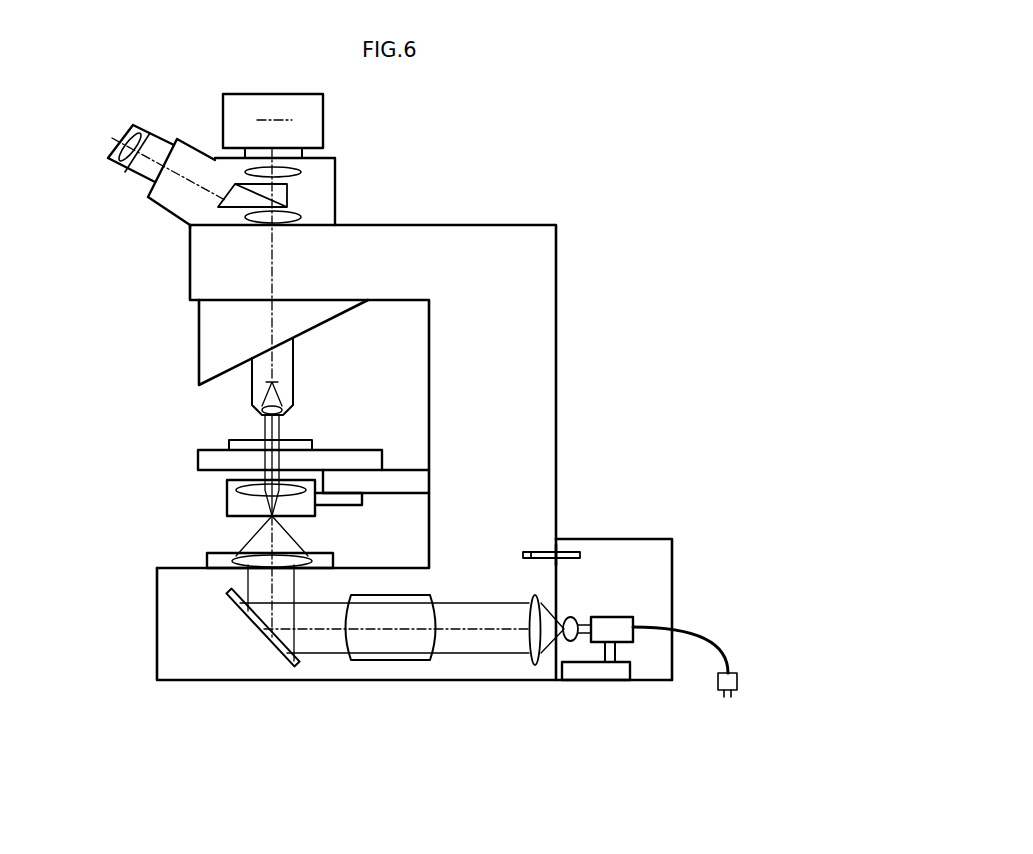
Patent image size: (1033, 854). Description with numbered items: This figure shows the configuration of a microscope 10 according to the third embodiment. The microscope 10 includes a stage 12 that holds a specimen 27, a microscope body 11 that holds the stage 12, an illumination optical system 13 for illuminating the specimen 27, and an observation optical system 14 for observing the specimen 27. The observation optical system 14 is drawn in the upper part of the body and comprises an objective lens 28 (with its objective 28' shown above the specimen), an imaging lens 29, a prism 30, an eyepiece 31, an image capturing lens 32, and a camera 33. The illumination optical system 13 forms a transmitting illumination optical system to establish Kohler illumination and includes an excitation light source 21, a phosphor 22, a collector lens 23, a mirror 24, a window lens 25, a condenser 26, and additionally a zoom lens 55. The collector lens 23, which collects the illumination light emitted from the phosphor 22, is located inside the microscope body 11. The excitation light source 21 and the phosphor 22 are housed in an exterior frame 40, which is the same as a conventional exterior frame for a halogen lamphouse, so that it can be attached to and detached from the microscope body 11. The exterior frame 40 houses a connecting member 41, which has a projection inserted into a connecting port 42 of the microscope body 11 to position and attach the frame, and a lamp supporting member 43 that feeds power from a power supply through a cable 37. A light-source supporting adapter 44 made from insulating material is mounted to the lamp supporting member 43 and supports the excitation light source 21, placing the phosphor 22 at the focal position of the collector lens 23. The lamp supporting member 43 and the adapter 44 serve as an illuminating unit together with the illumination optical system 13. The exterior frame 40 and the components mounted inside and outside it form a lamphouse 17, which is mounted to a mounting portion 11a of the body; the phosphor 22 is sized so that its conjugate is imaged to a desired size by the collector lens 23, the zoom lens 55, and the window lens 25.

The microscope 10 is at (514, 148).
The microscope body 11 is at (557, 402).
The mounting portion 11a is at (553, 664).
The stage 12 is at (364, 449).
The illumination optical system 13 is at (142, 508).
The observation optical system 14 is at (171, 283).
The lamphouse 17 is at (676, 497).
The excitation light source 21 is at (615, 612).
The phosphor 22 is at (573, 642).
The collector lens 23 is at (530, 594).
The mirror 24 is at (257, 630).
The window lens 25 is at (221, 553).
The condenser 26 is at (237, 497).
The specimen 27 is at (243, 440).
The objective lens 28 is at (301, 400).
The objective 28' is at (299, 376).
The imaging lens 29 is at (301, 215).
The prism 30 is at (232, 188).
The eyepiece 31 is at (151, 135).
The image capturing lens 32 is at (301, 172).
The camera 33 is at (323, 120).
The cable 37 is at (688, 629).
The exterior frame 40 is at (625, 539).
The connecting member 41 is at (573, 559).
The connecting port 42 is at (523, 555).
The lamp supporting member 43 is at (630, 672).
The light-source supporting adapter 44 is at (616, 648).
The zoom lens 55 is at (387, 661).